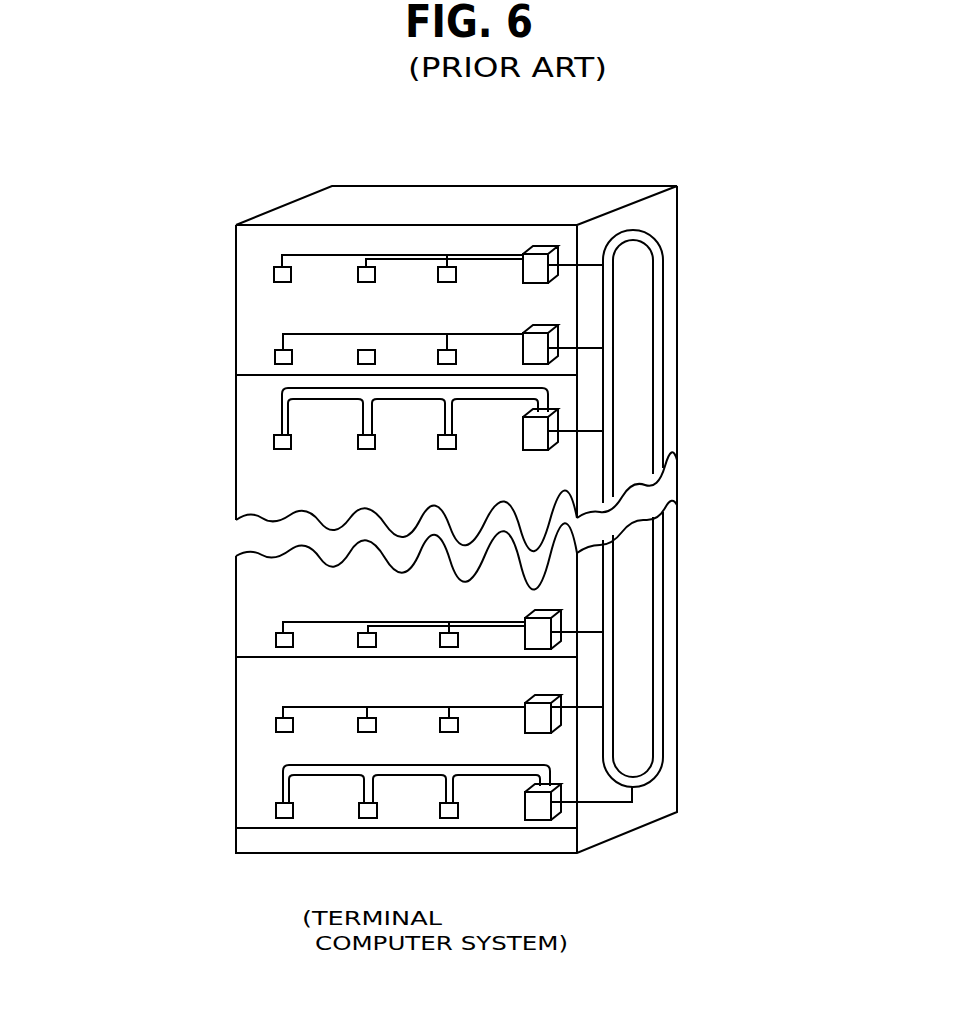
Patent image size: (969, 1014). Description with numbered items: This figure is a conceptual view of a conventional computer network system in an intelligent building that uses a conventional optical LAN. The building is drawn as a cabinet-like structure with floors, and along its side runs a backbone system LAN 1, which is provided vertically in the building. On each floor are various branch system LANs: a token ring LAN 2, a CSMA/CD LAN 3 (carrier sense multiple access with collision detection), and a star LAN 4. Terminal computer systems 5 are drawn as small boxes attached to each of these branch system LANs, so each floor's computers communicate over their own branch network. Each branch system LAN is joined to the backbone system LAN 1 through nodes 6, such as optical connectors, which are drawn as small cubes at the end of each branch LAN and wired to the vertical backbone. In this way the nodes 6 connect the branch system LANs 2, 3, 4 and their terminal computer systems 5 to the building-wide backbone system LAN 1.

The backbone system LAN 1 is at (663, 389).
The token ring LAN 2 is at (281, 778).
The CSMA/CD LAN 3 is at (302, 706).
The star LAN 4 is at (300, 255).
The terminal computer systems 5 is at (287, 277).
The nodes 6 is at (533, 262).